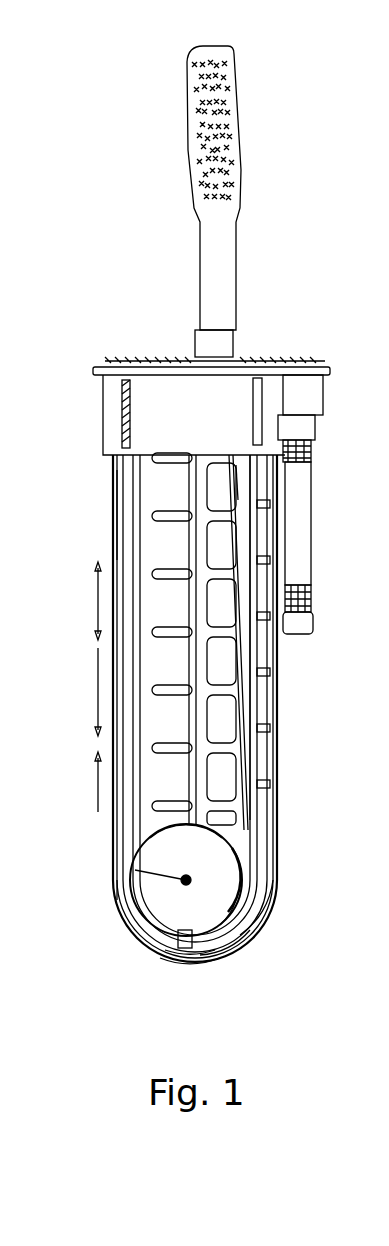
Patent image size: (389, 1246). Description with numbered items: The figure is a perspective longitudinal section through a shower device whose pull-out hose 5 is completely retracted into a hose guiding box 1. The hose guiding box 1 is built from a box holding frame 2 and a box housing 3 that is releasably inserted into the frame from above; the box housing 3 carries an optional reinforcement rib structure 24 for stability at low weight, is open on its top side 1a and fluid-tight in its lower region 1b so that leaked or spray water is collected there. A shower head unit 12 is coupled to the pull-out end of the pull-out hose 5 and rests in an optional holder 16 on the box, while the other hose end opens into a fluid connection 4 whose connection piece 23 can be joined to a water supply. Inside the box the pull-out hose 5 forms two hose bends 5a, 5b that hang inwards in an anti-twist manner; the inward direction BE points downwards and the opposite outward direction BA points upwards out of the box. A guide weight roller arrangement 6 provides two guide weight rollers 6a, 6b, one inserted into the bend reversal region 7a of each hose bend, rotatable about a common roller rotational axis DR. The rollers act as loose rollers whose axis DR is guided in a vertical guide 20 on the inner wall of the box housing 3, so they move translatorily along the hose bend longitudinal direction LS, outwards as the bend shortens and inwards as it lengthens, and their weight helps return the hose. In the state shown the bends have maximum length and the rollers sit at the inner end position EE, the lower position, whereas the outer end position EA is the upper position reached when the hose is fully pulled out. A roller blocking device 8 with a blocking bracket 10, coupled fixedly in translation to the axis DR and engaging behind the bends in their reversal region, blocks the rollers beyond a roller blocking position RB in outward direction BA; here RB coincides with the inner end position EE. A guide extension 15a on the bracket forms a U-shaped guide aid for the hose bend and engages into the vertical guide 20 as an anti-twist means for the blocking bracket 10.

The hose guiding box 1 is at (108, 500).
The top side 1a is at (138, 365).
The lower region 1b is at (270, 922).
The box holding frame 2 is at (100, 410).
The box housing 3 is at (140, 508).
The fluid connection 4 is at (312, 458).
The pull-out hose 5 is at (250, 738).
The hose bend 5a is at (248, 548).
The hose bend 5b is at (240, 522).
The guide weight roller arrangement 6 is at (250, 875).
The guide weight roller 6a is at (262, 900).
The guide weight roller 6b is at (233, 846).
The bend reversal region 7a is at (240, 945).
The roller blocking device 8 is at (193, 962).
The blocking bracket 10 is at (190, 952).
The shower head unit 12 is at (240, 183).
The guide extension 15a is at (178, 950).
The holder 16 is at (240, 340).
The vertical guide 20 is at (236, 790).
The connection piece 23 is at (313, 592).
The reinforcement rib structure 24 is at (213, 650).
The end position outwards with respect to the box EA is at (118, 520).
The end position inwards with respect to the box EE is at (115, 912).
The hose bend longitudinal direction LS is at (95, 600).
The inward direction with respect to the box BE is at (95, 700).
The outward direction with respect to the box BA is at (95, 795).
The roller blocking position RB is at (165, 875).
The roller rotational axis DR is at (183, 885).